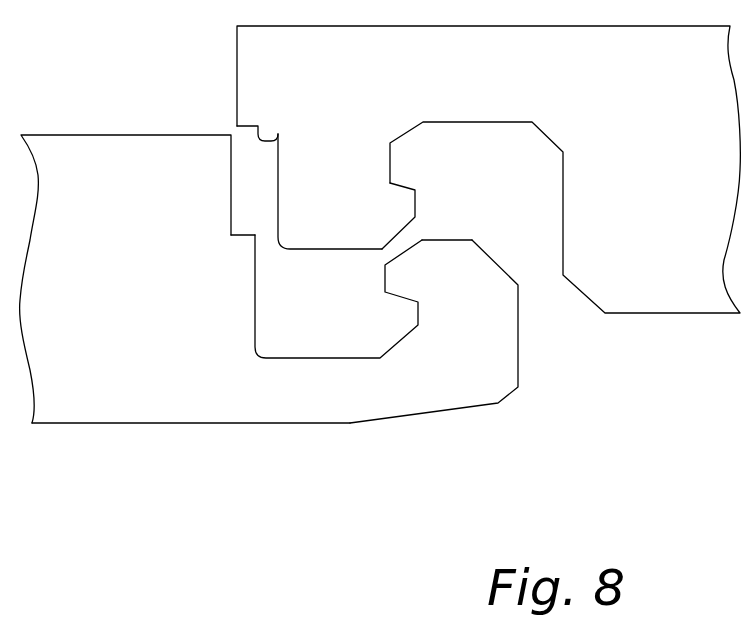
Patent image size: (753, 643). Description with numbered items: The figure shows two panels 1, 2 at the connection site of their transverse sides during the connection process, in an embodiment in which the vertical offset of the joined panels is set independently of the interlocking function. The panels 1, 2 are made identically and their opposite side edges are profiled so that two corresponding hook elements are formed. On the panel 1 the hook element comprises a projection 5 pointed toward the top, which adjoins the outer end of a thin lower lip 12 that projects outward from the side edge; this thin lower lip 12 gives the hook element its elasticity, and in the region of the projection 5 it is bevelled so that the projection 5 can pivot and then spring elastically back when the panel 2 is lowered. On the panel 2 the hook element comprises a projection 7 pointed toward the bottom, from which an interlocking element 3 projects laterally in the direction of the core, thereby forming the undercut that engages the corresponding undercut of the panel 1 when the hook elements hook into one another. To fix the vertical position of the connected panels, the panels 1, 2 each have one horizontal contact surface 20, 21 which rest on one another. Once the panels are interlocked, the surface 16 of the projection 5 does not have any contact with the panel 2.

The panel 1 is at (107, 210).
The panel 2 is at (690, 78).
The interlocking element 3 is at (400, 208).
The projection 5 is at (474, 347).
The projection 7 is at (340, 216).
The lower lip 12 is at (315, 405).
The surface 16 is at (447, 238).
The horizontal contact surface 20 is at (278, 131).
The horizontal contact surface 21 is at (241, 231).